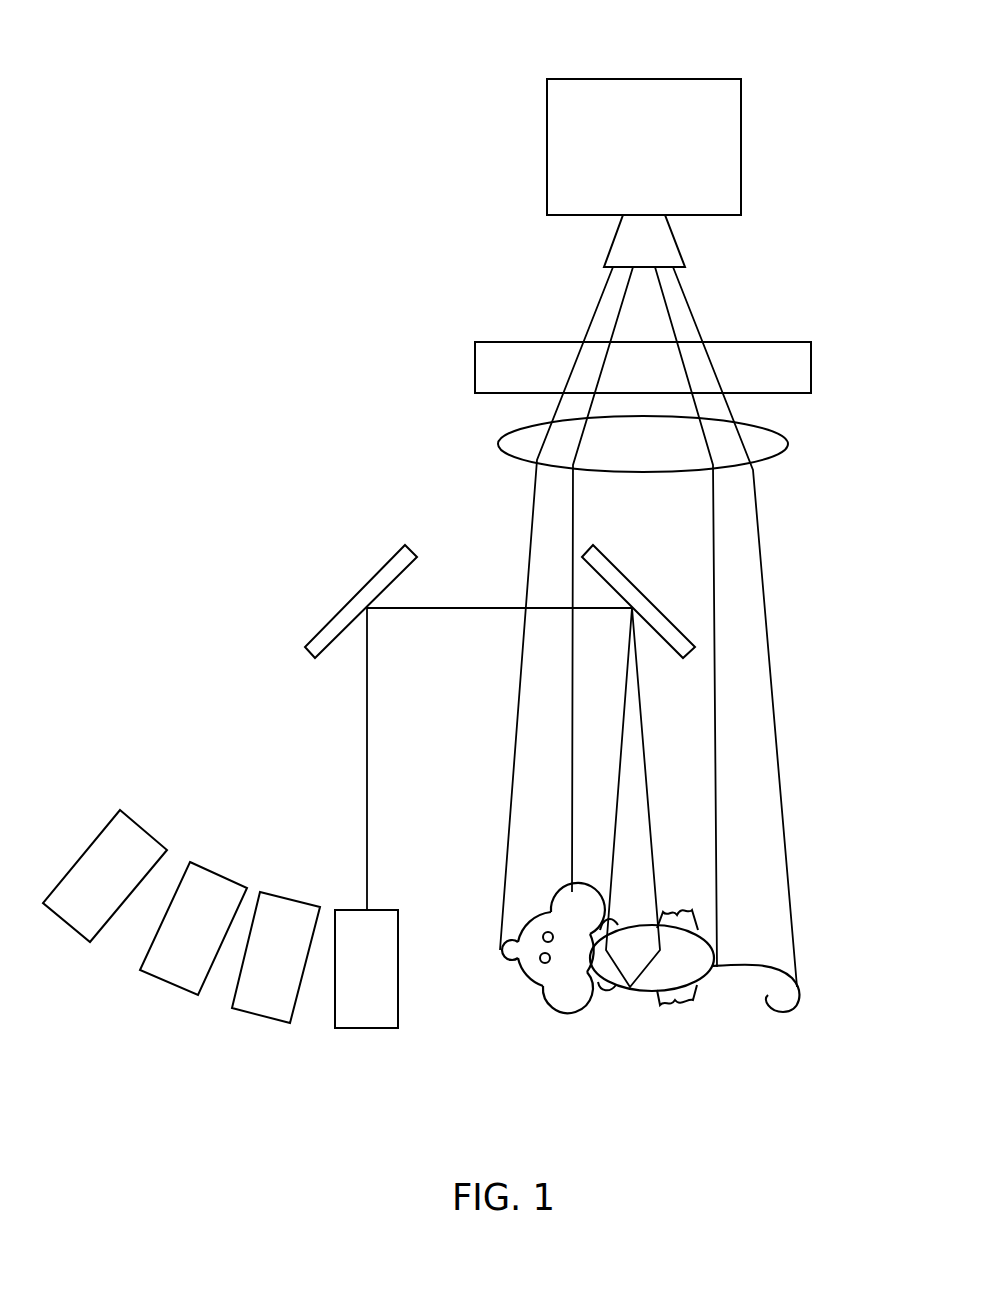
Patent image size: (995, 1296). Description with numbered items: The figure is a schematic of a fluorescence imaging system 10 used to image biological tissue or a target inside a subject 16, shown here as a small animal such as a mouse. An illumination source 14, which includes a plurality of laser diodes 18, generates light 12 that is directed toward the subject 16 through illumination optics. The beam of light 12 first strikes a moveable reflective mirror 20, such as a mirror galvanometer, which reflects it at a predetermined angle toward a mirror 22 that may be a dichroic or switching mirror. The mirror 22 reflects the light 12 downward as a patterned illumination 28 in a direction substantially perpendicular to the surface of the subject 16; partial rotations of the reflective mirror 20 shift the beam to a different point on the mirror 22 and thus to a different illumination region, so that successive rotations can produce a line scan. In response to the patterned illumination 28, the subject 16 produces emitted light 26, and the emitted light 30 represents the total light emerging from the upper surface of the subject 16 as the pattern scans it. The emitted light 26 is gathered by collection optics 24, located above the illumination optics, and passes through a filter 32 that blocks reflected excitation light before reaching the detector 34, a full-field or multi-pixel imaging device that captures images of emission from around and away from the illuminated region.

The fluorescence imaging system 10 is at (238, 56).
The light 12 is at (366, 757).
The illumination source 14 is at (413, 1018).
The subject 16 is at (648, 988).
The laser diodes 18 is at (183, 972).
The reflective mirror 20 is at (328, 630).
The mirror 22 is at (645, 602).
The collection optics 24 is at (788, 447).
The emitted light 26 is at (572, 848).
The patterned illumination 28 is at (620, 773).
The emitted light 30 is at (512, 762).
The filter 32 is at (811, 370).
The detector 34 is at (737, 147).